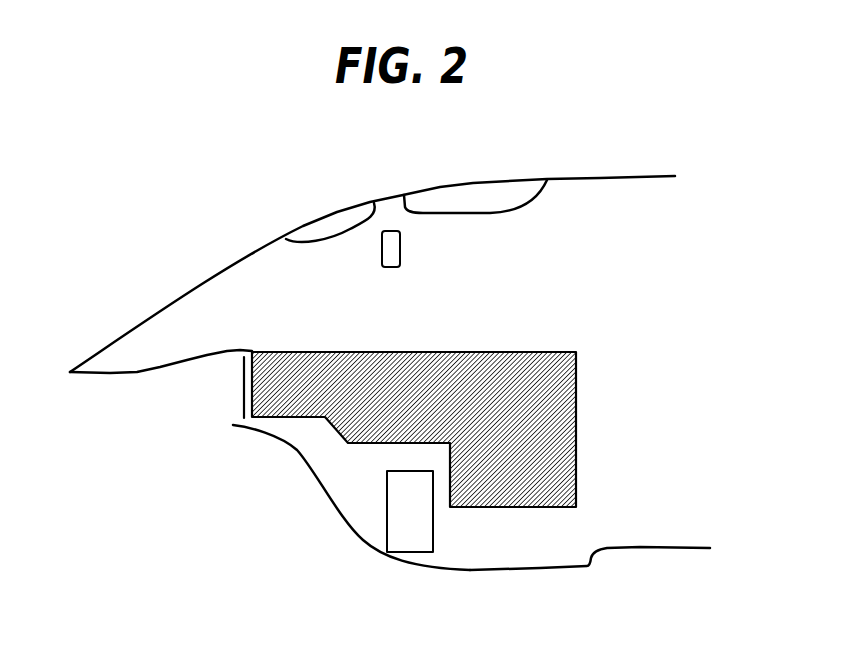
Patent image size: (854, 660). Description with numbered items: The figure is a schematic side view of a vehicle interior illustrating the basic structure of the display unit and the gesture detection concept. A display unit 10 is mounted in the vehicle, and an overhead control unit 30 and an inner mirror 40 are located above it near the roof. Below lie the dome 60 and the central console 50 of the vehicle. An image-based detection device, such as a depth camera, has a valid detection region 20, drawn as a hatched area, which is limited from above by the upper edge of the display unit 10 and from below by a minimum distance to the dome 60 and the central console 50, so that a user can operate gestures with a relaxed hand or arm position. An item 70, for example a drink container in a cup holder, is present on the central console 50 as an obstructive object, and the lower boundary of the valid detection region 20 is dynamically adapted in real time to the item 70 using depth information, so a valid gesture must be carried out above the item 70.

The display unit 10 is at (243, 393).
The valid detection region 20 is at (578, 385).
The overhead control unit 30 is at (482, 215).
The inner mirror 40 is at (388, 267).
The central console 50 is at (493, 570).
The dome 60 is at (323, 497).
The item 70 is at (387, 542).